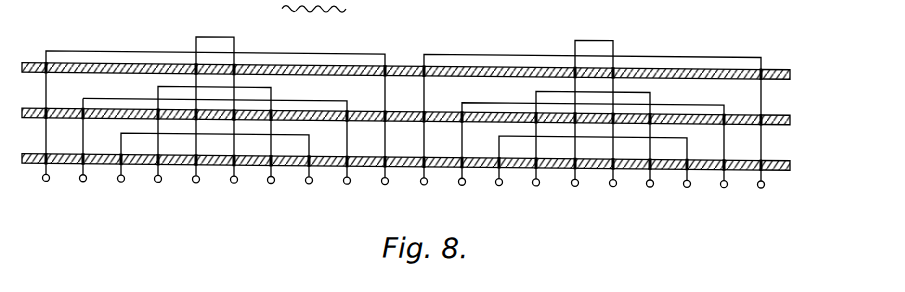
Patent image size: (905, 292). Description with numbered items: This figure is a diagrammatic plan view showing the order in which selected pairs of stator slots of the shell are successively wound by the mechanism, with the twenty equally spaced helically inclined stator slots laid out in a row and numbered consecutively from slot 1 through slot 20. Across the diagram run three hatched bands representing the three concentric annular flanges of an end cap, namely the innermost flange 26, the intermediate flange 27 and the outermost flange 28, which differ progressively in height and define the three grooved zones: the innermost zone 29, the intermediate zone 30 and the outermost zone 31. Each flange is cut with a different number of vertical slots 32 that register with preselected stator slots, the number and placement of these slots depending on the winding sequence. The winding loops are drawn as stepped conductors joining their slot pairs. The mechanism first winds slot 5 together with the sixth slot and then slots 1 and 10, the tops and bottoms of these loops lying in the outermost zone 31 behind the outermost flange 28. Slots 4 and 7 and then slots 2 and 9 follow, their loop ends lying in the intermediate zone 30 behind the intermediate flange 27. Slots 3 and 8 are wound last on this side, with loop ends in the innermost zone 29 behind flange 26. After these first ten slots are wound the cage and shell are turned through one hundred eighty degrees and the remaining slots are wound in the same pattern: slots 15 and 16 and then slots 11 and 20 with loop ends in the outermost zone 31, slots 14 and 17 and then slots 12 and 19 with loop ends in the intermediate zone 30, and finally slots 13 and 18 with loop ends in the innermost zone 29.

The stator slot 1 is at (236, 35).
The stator slot 2 is at (403, 98).
The stator slot 3 is at (158, 86).
The stator slot 4 is at (403, 101).
The stator slot 5 is at (309, 132).
The innermost flange 26 is at (335, 162).
The intermediate flange 27 is at (361, 108).
The outermost flange 28 is at (366, 68).
The innermost zone 29 is at (95, 142).
The intermediate zone 30 is at (100, 97).
The outermost zone 31 is at (163, 56).
The vertical slots 32 is at (207, 157).
The stator slot 7 is at (271, 192).
The stator slot 8 is at (309, 193).
The stator slot 9 is at (347, 193).
The stator slot 10 is at (385, 193).
The stator slot 11 is at (423, 194).
The stator slot 12 is at (461, 194).
The stator slot 13 is at (498, 195).
The stator slot 14 is at (536, 195).
The stator slot 15 is at (574, 195).
The stator slot 16 is at (612, 196).
The stator slot 17 is at (649, 196).
The stator slot 18 is at (686, 195).
The stator slot 19 is at (723, 196).
The stator slot 20 is at (761, 196).